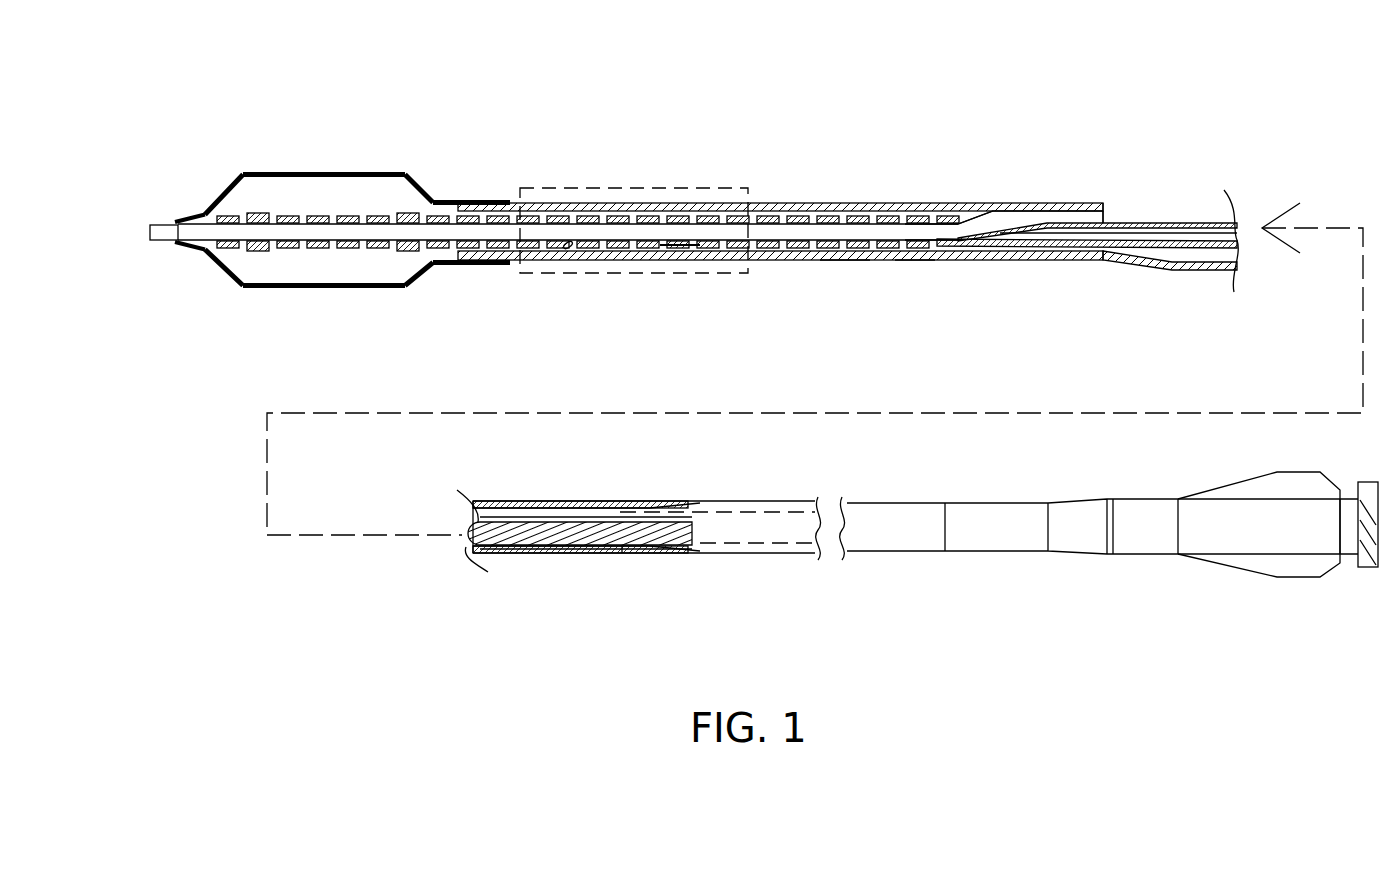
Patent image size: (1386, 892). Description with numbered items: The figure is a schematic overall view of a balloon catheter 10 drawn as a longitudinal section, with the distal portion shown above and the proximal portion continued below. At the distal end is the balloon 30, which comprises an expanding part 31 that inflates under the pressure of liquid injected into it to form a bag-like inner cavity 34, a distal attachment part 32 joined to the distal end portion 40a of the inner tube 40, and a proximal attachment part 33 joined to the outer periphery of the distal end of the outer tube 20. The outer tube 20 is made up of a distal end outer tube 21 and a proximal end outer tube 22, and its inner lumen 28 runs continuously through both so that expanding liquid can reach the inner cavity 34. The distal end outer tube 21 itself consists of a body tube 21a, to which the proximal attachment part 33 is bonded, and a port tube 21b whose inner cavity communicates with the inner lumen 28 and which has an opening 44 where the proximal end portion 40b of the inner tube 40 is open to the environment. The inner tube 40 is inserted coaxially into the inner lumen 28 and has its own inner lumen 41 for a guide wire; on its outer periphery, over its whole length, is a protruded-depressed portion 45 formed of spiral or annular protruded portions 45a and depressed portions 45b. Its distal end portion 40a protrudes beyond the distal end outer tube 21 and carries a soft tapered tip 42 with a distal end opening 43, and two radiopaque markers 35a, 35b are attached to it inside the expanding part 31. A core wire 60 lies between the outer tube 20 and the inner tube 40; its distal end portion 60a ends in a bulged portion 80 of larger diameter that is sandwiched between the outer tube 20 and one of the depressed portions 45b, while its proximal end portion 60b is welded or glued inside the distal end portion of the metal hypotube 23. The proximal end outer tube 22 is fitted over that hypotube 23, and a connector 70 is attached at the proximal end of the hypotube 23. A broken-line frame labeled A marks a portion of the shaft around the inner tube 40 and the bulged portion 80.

The balloon catheter 10 is at (690, 68).
The outer tube 20 is at (786, 169).
The distal end outer tube 21 is at (858, 191).
The body tube 21a is at (913, 261).
The port tube 21b is at (1040, 262).
The proximal end outer tube 22 is at (1189, 206).
The hypotube 23 is at (900, 530).
The inner lumen 28 is at (845, 261).
The balloon 30 is at (368, 144).
The expanding part 31 is at (322, 171).
The distal attachment part 32 is at (203, 217).
The proximal attachment part 33 is at (476, 202).
The inner cavity 34 is at (391, 200).
The radiopaque marker 35a is at (260, 251).
The radiopaque marker 35b is at (394, 251).
The inner tube 40 is at (632, 203).
The distal end portion 40a is at (268, 213).
The proximal end portion 40b is at (998, 212).
The inner lumen 41 is at (930, 214).
The tip 42 is at (177, 222).
The distal end opening 43 is at (150, 232).
The opening 44 is at (1104, 216).
The protruded-depressed portion 45 is at (645, 92).
The protruded portions 45a is at (528, 200).
The depressed portions 45b is at (547, 200).
The core wire 60 is at (1196, 249).
The distal end portion 60a is at (684, 251).
The proximal end portion 60b is at (655, 541).
The connector 70 is at (1235, 530).
The bulged portion 80 is at (571, 249).
The region A is at (710, 188).